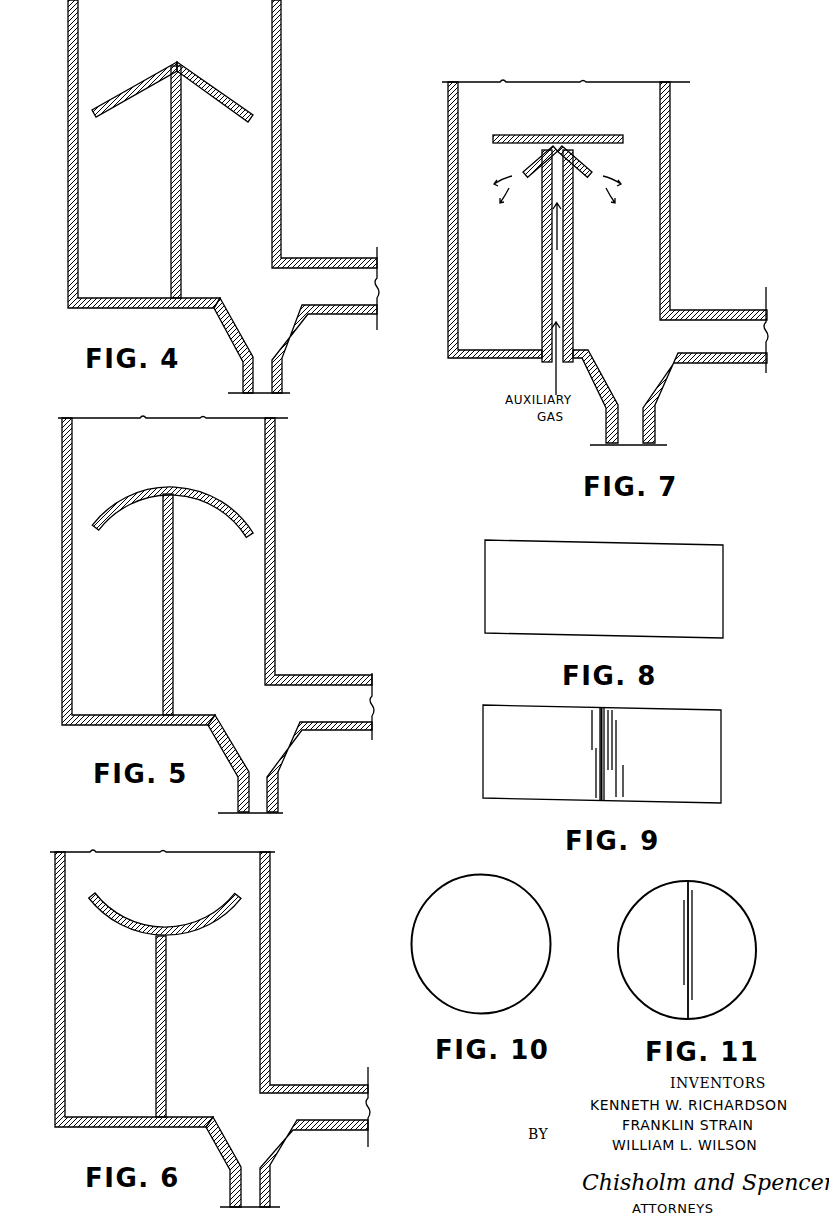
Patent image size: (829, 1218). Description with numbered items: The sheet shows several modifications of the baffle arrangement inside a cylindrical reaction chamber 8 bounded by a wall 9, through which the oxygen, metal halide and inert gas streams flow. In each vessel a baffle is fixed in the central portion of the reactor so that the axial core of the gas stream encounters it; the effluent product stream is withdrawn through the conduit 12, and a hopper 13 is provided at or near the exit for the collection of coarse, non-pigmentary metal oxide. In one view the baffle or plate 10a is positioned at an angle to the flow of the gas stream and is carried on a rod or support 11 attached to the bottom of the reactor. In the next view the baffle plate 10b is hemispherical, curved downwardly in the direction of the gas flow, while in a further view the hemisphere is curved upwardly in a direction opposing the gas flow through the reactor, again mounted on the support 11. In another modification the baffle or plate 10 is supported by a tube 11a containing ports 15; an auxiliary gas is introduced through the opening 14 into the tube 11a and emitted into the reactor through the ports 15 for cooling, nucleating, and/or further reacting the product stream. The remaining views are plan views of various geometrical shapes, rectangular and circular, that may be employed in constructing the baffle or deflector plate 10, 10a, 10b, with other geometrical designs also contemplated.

In FIG. 4, the reaction chamber 8 is at (184, 38).
In FIG. 5, the reaction chamber 8 is at (173, 457).
In FIG. 7, the reaction chamber 8 is at (517, 117).
In FIG. 4, the wall 9 is at (68, 160).
In FIG. 5, the wall 9 is at (62, 608).
In FIG. 6, the wall 9 is at (55, 993).
In FIG. 7, the wall 9 is at (607, 220).
In FIG. 7, the baffle or plate 10 is at (572, 135).
In FIG. 8, the baffle or plate 10 is at (606, 594).
In FIG. 4, the baffle or plate 10a is at (128, 92).
In FIG. 9, the baffle or plate 10a is at (602, 754).
In FIG. 11, the baffle or plate 10a is at (687, 950).
In FIG. 5, the baffle plate 10b is at (118, 505).
In FIG. 6, the baffle plate 10b is at (170, 930).
In FIG. 10, the baffle plate 10b is at (481, 944).
In FIG. 4, the rod or support 11 is at (171, 184).
In FIG. 5, the rod or support 11 is at (163, 596).
In FIG. 6, the rod or support 11 is at (156, 1010).
In FIG. 7, the tube 11a is at (543, 222).
In FIG. 4, the conduit 12 is at (352, 300).
In FIG. 5, the conduit 12 is at (346, 715).
In FIG. 6, the conduit 12 is at (343, 1117).
In FIG. 7, the conduit 12 is at (731, 347).
In FIG. 4, the hopper 13 is at (237, 351).
In FIG. 5, the hopper 13 is at (233, 770).
In FIG. 6, the hopper 13 is at (226, 1162).
In FIG. 7, the hopper 13 is at (668, 389).
In FIG. 7, the opening 14 is at (548, 362).
In FIG. 7, the ports 15 is at (522, 167).